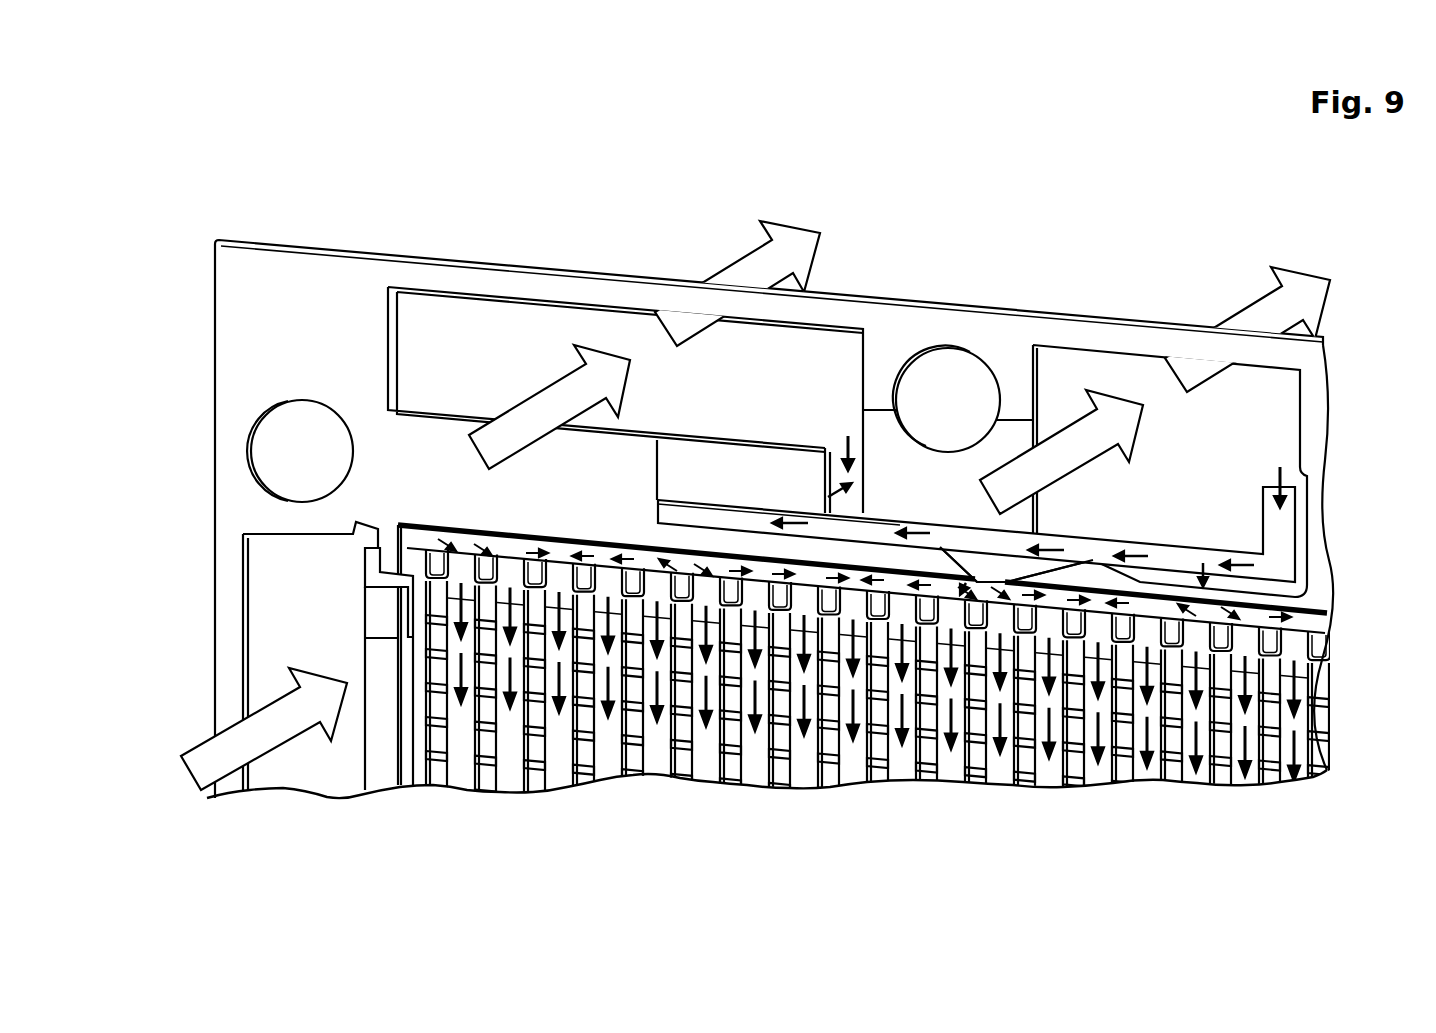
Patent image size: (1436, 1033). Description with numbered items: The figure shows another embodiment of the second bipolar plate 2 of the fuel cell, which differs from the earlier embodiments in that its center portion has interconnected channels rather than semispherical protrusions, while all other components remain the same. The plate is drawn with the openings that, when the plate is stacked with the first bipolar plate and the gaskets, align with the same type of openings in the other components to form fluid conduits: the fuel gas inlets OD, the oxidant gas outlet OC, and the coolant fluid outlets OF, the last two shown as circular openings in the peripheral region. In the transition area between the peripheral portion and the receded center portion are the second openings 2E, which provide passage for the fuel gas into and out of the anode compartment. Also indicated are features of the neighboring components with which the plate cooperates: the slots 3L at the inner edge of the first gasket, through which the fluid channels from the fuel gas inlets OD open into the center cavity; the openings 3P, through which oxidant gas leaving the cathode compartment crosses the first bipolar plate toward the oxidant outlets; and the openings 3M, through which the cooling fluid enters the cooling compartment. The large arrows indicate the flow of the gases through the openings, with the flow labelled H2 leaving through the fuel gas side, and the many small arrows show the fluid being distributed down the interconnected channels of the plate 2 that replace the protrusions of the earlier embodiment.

The second bipolar plate 2 is at (1073, 757).
The second openings 2E is at (690, 553).
The slots 3L is at (1000, 598).
The openings 3M is at (368, 578).
The openings 3P is at (822, 493).
The oxidant gas outlet OC is at (498, 317).
The fuel gas inlets OD is at (1227, 414).
The coolant fluid outlets OF is at (312, 598).
The heat flow H2 is at (1247, 309).